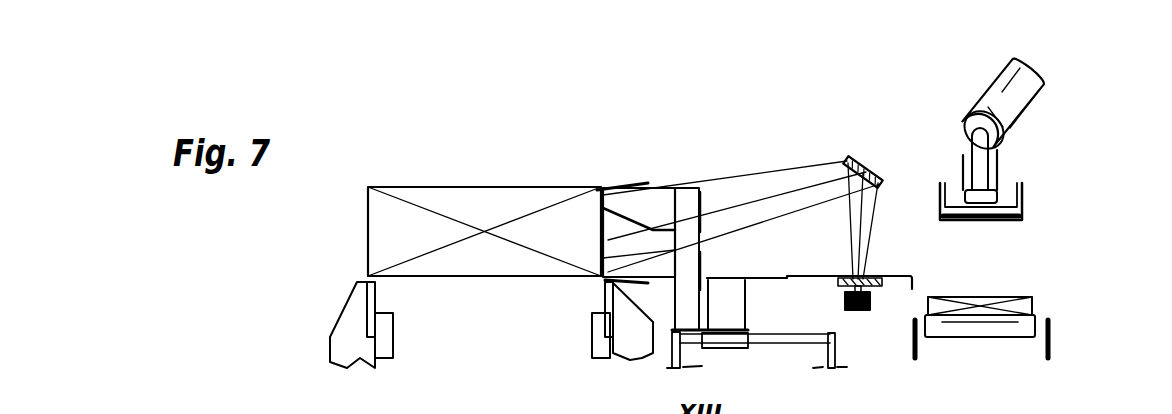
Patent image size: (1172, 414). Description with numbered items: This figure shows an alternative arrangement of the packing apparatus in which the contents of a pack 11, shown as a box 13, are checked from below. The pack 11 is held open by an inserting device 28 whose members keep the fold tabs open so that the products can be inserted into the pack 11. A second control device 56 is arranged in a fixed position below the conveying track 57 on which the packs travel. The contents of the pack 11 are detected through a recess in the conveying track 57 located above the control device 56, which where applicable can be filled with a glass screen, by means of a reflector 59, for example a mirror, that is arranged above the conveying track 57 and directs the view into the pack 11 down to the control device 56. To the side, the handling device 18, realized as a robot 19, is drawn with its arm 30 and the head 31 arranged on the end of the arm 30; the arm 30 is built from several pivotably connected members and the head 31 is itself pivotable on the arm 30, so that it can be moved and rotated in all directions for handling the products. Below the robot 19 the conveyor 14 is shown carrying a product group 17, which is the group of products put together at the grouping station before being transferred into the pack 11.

The pack 11 is at (484, 184).
The box 13 is at (460, 187).
The inserting device 28 is at (645, 213).
The reflector 59 is at (863, 168).
The conveying track 57 is at (805, 280).
The second control device 56 is at (858, 312).
The arm 30 is at (1003, 100).
The handling device 18 is at (1035, 109).
The robot 19 is at (1035, 109).
The head 31 is at (1023, 202).
The product group 17 is at (980, 298).
The conveyor 14 is at (1037, 327).